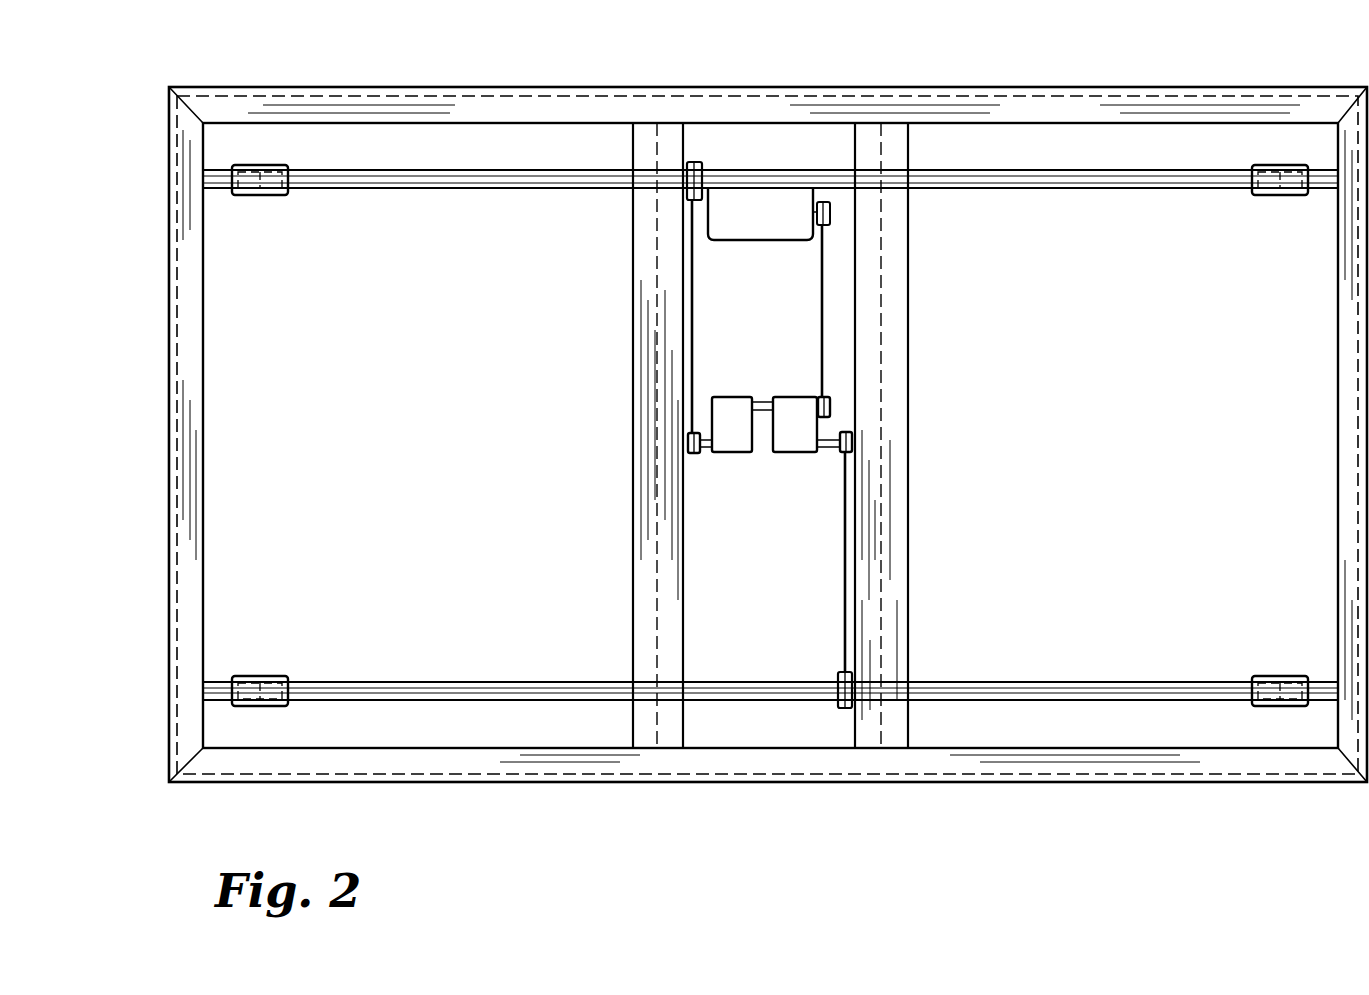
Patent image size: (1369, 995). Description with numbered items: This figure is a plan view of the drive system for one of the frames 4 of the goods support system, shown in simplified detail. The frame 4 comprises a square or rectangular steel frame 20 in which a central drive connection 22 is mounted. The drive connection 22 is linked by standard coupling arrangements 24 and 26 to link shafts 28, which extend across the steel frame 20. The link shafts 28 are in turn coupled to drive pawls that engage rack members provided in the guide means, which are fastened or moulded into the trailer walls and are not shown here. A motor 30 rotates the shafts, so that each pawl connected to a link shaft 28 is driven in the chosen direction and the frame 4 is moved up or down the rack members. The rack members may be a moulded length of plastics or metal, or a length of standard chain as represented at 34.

The frame 4 is at (250, 450).
The steel frame 20 is at (487, 763).
The central drive connection 22 is at (690, 318).
The coupling arrangement 24 is at (692, 160).
The coupling arrangement 26 is at (838, 672).
The link shaft 28 is at (1083, 188).
The motor 30 is at (773, 240).
The chain 34 is at (822, 327).